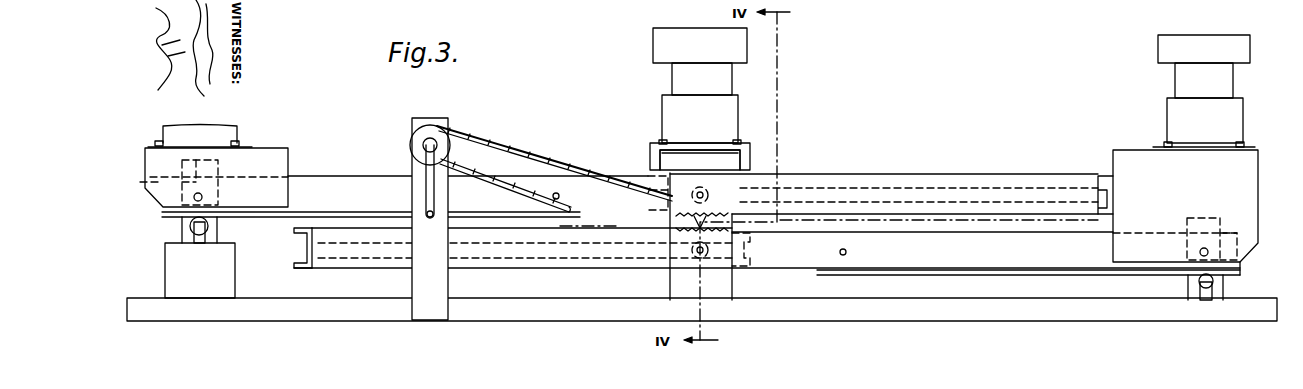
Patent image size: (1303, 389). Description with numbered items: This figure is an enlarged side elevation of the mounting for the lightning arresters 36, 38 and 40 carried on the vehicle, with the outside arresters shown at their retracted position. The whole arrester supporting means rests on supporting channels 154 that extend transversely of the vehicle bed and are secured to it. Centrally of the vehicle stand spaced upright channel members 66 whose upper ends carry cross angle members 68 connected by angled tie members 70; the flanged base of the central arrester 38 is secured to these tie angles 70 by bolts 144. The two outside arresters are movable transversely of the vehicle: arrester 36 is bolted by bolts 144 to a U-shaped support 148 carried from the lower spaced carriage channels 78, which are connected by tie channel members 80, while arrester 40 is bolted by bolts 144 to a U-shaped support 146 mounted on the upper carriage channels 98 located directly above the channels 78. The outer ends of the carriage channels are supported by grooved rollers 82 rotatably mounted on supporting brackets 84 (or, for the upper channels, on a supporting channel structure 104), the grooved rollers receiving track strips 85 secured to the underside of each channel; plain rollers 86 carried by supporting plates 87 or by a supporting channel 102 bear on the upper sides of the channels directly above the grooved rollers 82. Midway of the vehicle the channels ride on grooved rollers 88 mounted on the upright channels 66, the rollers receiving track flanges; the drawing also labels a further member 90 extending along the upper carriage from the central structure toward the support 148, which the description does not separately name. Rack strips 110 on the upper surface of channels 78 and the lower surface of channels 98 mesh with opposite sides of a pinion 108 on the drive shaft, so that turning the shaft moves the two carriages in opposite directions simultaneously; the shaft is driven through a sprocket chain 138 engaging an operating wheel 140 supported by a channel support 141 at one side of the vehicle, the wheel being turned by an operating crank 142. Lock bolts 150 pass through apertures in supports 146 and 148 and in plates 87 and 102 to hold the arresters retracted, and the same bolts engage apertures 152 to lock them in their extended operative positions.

The lightning arrester 36 is at (1150, 122).
The lightning arrester 38 is at (642, 91).
The lightning arrester 40 is at (212, 122).
The upright channel member 66 is at (734, 280).
The cross angle member 68 is at (693, 158).
The angled tie member 70 is at (652, 151).
The carriage channel 78 is at (1015, 268).
The tie channel member 80 is at (1258, 270).
The grooved roller 82 is at (189, 226).
The supporting bracket 84 is at (195, 235).
The track strip 85 is at (312, 210).
The plain roller 86 is at (220, 166).
The supporting plate 87 is at (1226, 286).
The grooved roller 88 is at (710, 195).
The bar 90 is at (880, 175).
The carriage channel 98 is at (350, 176).
The supporting channel 102 is at (218, 233).
The supporting channel structure 104 is at (166, 262).
The pinion 108 is at (676, 222).
The rack strip 110 is at (300, 230).
The sprocket chain 138 is at (544, 155).
The operating wheel 140 is at (444, 152).
The channel support 141 is at (450, 283).
The operating crank 142 is at (426, 188).
The bolt 144 is at (157, 141).
The U-shaped support 146 is at (148, 155).
The U-shaped support 148 is at (1257, 197).
The lock bolt 150 is at (203, 197).
The aperture 152 is at (560, 196).
The supporting channel 154 is at (170, 318).